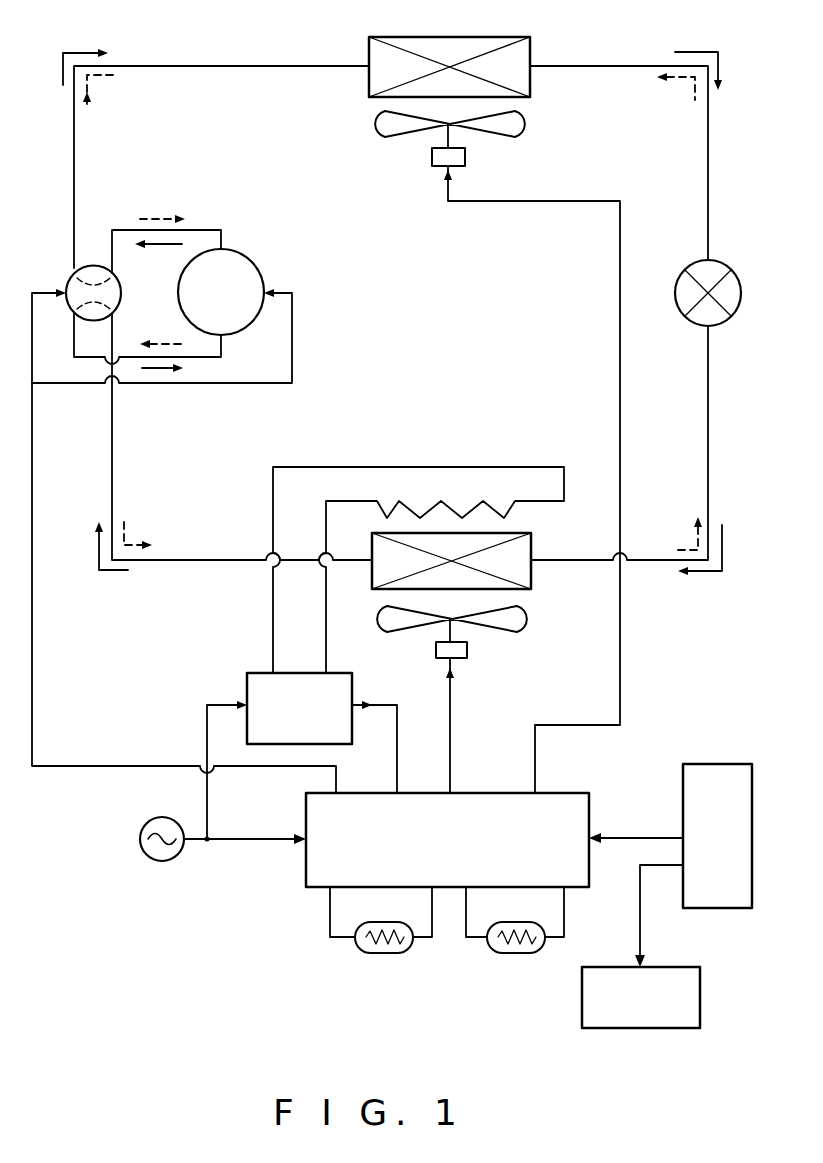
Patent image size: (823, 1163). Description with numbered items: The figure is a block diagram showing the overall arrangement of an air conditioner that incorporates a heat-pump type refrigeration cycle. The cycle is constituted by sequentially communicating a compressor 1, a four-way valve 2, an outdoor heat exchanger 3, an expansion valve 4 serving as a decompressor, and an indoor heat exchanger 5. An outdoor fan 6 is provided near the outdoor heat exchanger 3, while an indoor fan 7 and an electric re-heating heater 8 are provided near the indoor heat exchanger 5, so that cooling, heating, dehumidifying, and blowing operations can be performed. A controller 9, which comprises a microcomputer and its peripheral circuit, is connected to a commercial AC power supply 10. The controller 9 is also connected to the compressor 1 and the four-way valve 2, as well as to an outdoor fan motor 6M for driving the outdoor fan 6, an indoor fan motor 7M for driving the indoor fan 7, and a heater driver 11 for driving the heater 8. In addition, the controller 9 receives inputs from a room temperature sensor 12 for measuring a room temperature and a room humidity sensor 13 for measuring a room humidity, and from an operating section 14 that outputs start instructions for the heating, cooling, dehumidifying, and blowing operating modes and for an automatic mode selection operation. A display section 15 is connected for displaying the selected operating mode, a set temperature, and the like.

The compressor 1 is at (258, 263).
The four-way valve 2 is at (72, 277).
The outdoor heat exchanger 3 is at (478, 37).
The expansion valve 4 is at (718, 262).
The indoor heat exchanger 5 is at (533, 578).
The outdoor fan 6 is at (440, 134).
The outdoor fan motor 6M is at (466, 160).
The indoor fan 7 is at (470, 628).
The indoor fan motor 7M is at (462, 662).
The electric heater 8 is at (525, 505).
The controller 9 is at (306, 870).
The commercial AC power supply 10 is at (163, 862).
The heater driver 11 is at (247, 690).
The room temperature sensor 12 is at (360, 955).
The room humidity sensor 13 is at (510, 955).
The operating section 14 is at (722, 910).
The display section 15 is at (700, 1007).